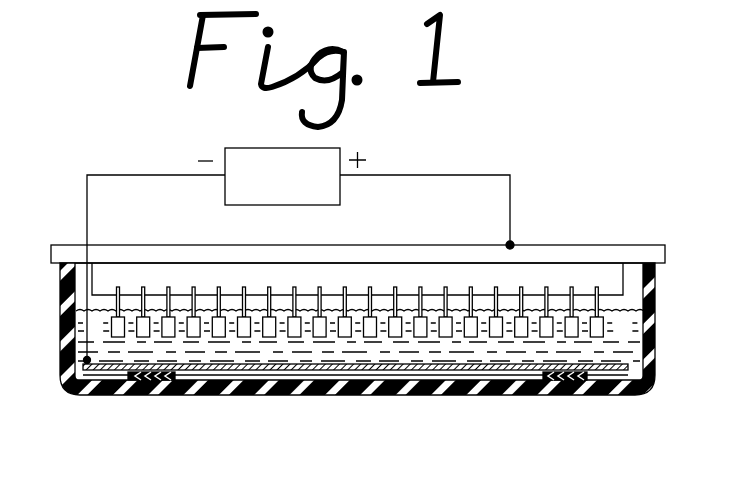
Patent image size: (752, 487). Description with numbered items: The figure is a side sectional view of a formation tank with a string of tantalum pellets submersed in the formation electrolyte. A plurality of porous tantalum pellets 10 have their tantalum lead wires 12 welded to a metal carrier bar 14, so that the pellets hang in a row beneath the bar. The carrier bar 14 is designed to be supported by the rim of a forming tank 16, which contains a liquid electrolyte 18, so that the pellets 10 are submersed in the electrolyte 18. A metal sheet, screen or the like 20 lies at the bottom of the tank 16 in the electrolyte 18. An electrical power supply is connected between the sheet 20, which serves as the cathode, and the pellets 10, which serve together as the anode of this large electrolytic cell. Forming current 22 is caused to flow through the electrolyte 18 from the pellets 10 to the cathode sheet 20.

The porous tantalum pellets 10 is at (247, 337).
The tantalum lead wires 12 is at (320, 288).
The metal carrier bar 14 is at (135, 258).
The forming tank 16 is at (93, 395).
The liquid electrolyte 18 is at (605, 355).
The metal sheet 20 is at (432, 365).
The forming current 22 is at (165, 160).